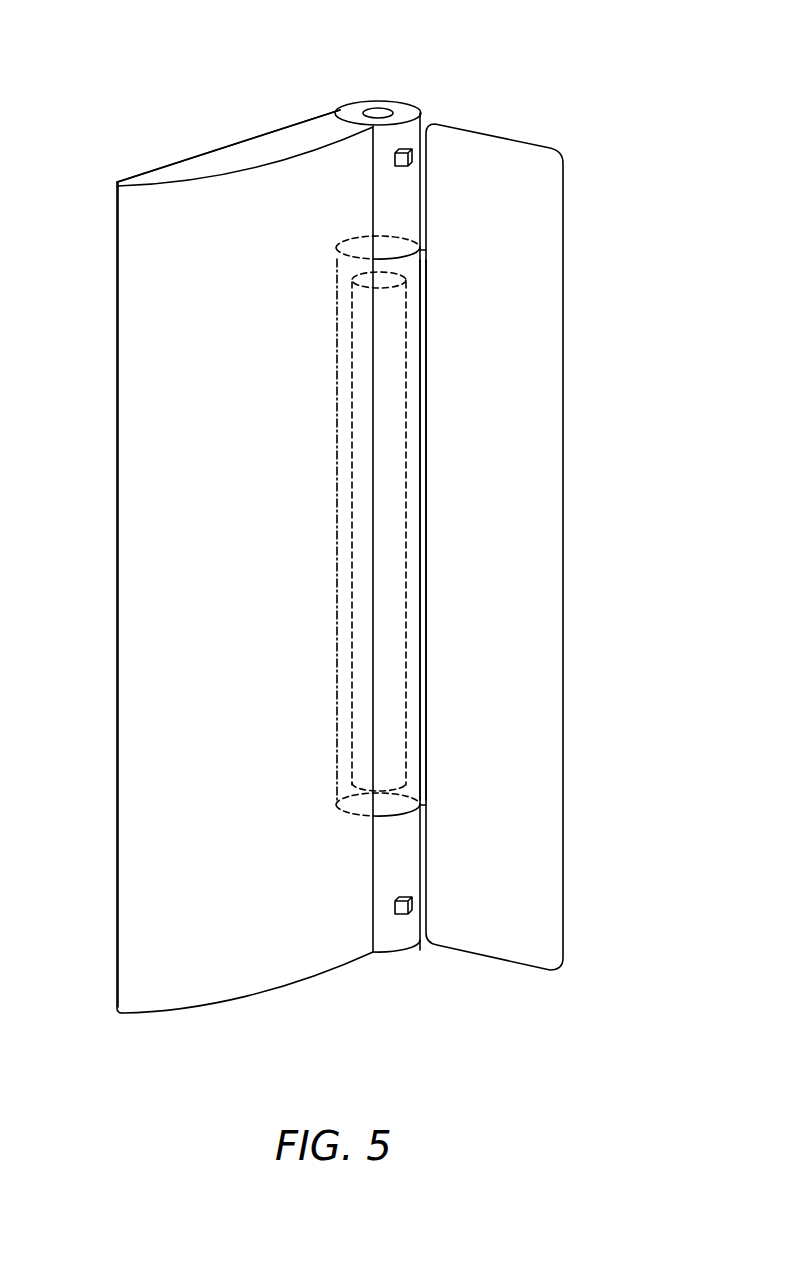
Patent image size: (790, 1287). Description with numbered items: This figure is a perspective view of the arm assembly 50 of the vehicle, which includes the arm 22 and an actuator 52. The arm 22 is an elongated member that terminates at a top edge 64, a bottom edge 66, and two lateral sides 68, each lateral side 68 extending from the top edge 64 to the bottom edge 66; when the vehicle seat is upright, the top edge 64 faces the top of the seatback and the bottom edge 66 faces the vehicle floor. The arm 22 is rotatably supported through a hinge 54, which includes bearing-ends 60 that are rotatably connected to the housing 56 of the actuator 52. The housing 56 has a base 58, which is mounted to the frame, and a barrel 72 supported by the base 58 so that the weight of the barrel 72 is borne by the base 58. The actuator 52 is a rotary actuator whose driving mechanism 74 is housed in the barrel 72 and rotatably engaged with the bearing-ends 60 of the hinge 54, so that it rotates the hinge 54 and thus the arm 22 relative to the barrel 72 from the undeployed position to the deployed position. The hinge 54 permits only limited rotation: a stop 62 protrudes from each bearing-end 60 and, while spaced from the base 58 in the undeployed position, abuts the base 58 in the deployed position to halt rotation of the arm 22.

The arm assembly 50 is at (286, 86).
The arm 22 is at (167, 167).
The top edge 64 is at (263, 157).
The lateral sides 68 is at (197, 650).
The bottom edge 66 is at (197, 1010).
The base 58 is at (507, 224).
The hinge 54 is at (428, 136).
The bearing-ends 60 is at (410, 140).
The stop 62 is at (403, 145).
The actuator 52 is at (334, 375).
The housing 56 is at (420, 413).
The barrel 72 is at (424, 518).
The driving mechanism 74 is at (407, 580).